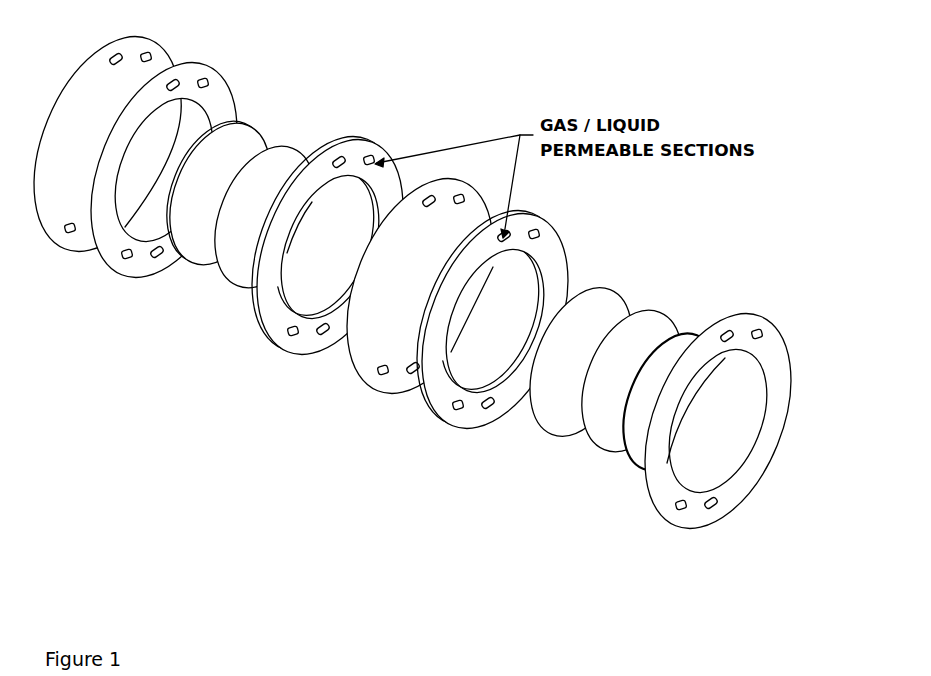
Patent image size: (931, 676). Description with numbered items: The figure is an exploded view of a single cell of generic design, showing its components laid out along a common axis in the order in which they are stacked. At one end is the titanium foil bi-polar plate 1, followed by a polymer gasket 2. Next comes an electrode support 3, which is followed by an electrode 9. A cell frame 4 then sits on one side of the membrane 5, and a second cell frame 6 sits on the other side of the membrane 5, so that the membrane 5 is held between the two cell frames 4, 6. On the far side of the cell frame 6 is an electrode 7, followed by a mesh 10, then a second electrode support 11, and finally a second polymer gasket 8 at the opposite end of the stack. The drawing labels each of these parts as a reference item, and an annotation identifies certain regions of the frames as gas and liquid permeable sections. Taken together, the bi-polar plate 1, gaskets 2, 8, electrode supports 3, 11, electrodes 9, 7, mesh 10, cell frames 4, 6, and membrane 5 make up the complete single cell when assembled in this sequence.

The titanium foil bi-polar plate 1 is at (50, 243).
The polymer gasket 2 is at (121, 281).
The electrode support 3 is at (185, 264).
The electrode 9 is at (240, 286).
The cell frame 4 is at (360, 141).
The membrane 5 is at (404, 393).
The cell frame 6 is at (437, 416).
The electrode 7 is at (543, 422).
The mesh 10 is at (594, 441).
The electrode support 11 is at (690, 331).
The polymer gasket 8 is at (756, 317).